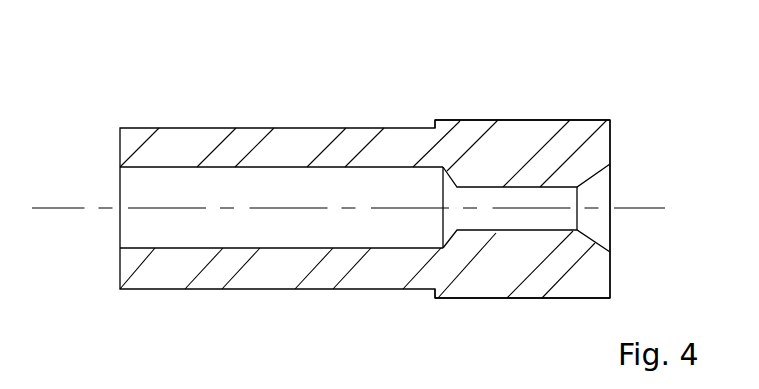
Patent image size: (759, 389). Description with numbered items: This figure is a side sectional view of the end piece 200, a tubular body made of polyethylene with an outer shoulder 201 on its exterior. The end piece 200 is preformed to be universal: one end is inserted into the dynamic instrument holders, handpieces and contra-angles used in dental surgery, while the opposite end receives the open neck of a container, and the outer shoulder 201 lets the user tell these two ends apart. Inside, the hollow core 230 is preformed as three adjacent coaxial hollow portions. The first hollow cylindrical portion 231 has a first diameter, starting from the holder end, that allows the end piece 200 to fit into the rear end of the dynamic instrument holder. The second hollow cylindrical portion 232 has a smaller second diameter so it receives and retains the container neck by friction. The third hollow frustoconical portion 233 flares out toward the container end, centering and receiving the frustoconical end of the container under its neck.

The end piece 200 is at (178, 102).
The outer shoulder 201 is at (435, 127).
The hollow core 230 is at (350, 232).
The first hollow cylindrical portion 231 is at (232, 230).
The second hollow cylindrical portion 232 is at (522, 222).
The third hollow frustoconical portion 233 is at (595, 205).